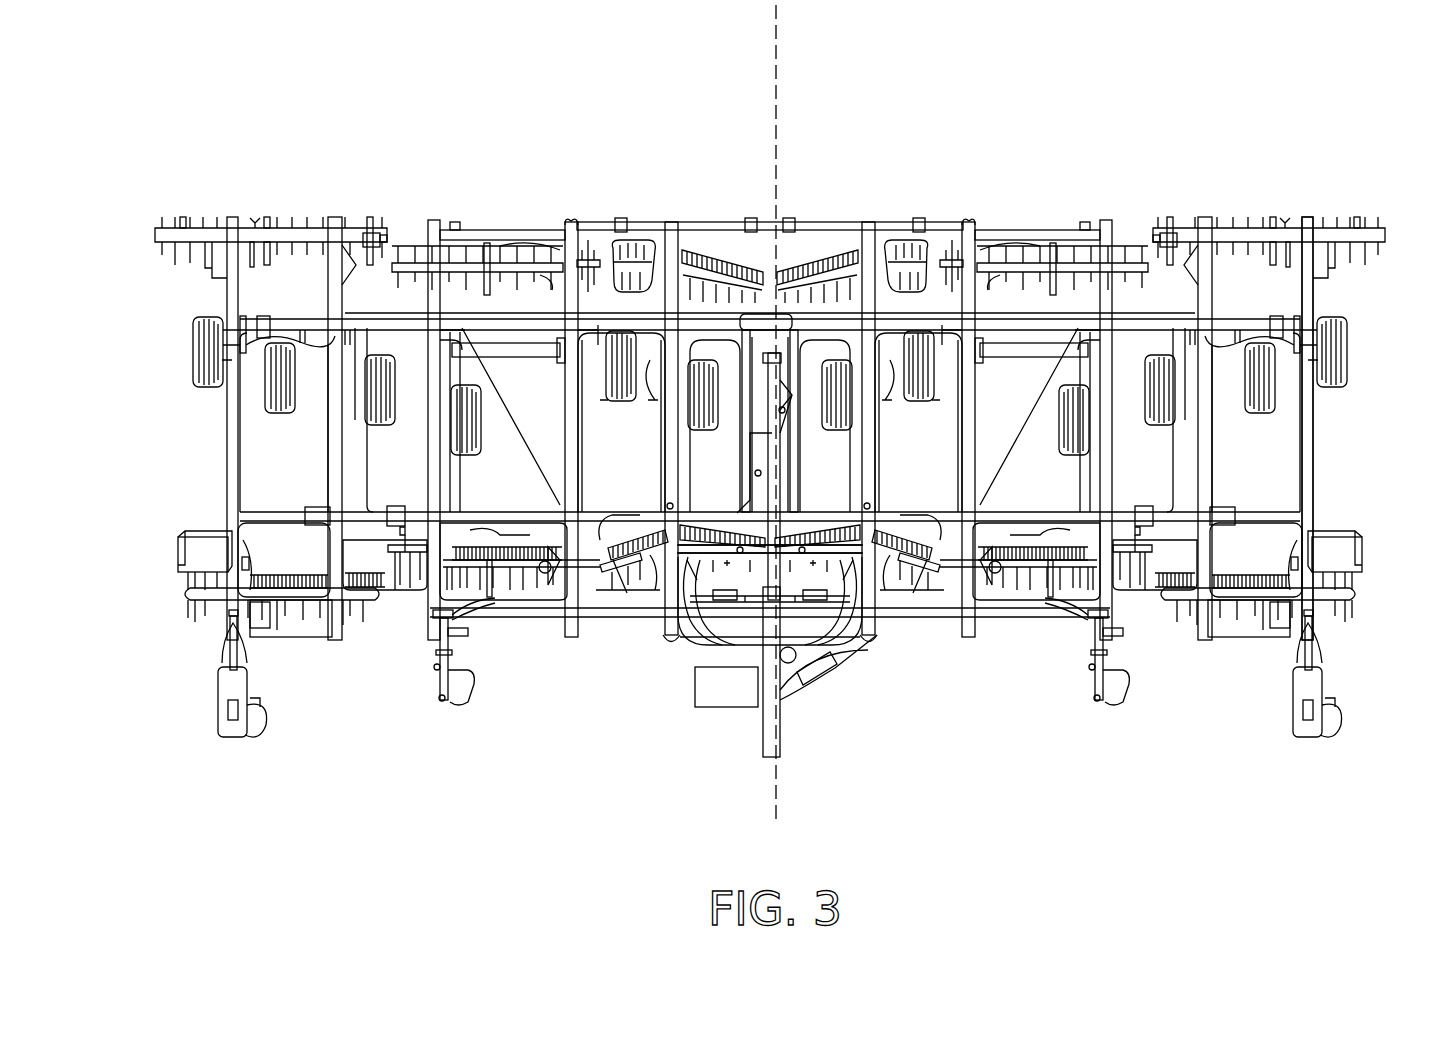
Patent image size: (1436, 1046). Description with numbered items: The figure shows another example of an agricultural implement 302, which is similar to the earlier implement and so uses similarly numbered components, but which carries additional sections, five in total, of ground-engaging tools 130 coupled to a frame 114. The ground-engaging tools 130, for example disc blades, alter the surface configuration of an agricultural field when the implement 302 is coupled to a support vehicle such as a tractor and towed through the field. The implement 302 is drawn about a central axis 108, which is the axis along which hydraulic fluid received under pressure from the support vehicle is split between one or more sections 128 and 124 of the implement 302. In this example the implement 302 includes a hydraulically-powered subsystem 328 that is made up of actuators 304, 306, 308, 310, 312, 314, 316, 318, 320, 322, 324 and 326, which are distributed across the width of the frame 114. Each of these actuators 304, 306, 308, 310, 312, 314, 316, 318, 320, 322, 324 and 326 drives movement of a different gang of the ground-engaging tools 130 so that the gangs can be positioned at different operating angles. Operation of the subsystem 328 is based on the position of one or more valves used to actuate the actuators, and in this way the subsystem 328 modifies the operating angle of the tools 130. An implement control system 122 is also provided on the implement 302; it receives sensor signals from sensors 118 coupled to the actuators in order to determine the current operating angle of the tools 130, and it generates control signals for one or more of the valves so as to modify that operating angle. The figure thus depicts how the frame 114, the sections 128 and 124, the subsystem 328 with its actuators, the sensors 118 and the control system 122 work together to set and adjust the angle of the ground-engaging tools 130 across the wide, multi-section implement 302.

The agricultural implement 302 is at (328, 116).
The axis 108 is at (777, 78).
The actuator 304 is at (245, 237).
The actuator 306 is at (432, 234).
The actuator 308 is at (648, 248).
The actuator 310 is at (905, 232).
The actuator 312 is at (1085, 235).
The actuator 314 is at (1296, 230).
The sensor 118 is at (617, 232).
The hydraulically-powered subsystem 328 is at (152, 466).
The frame 114 is at (1318, 470).
The actuator 326 is at (228, 608).
The actuator 324 is at (442, 628).
The ground-engaging tool 130 is at (540, 565).
The actuator 322 is at (615, 555).
The actuator 320 is at (932, 537).
The implement control system 122 is at (726, 687).
The actuator 318 is at (1098, 600).
The actuator 316 is at (1287, 555).
The section 128 is at (538, 785).
The section 124 is at (1010, 787).